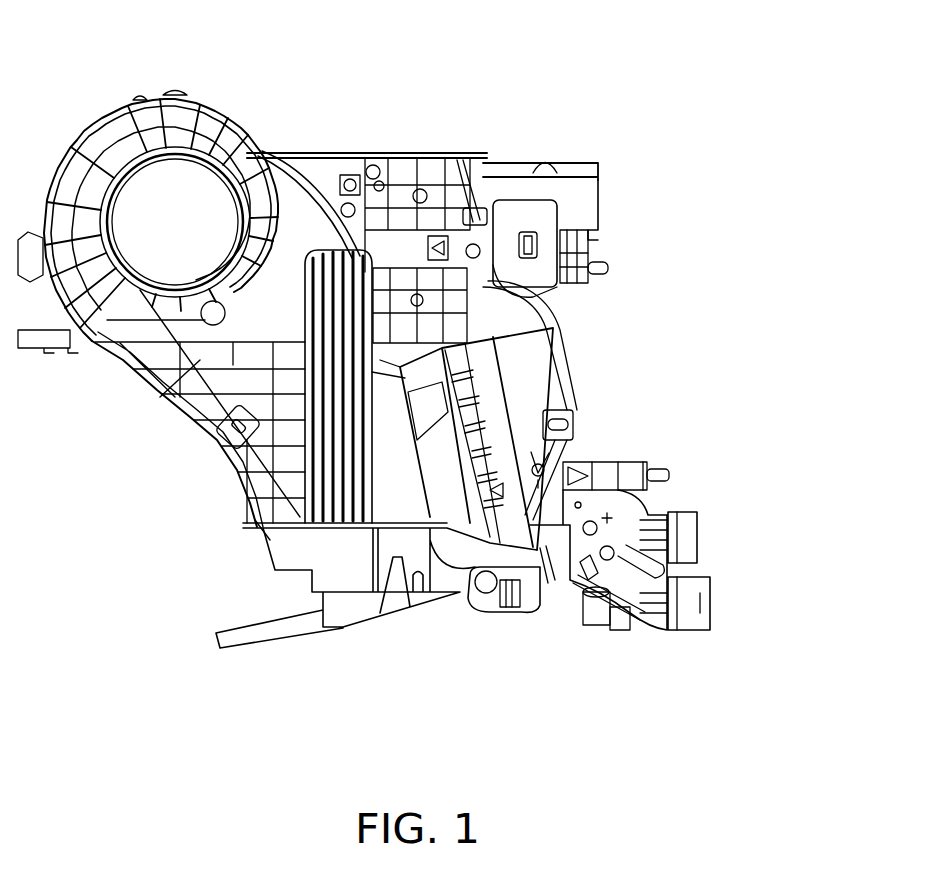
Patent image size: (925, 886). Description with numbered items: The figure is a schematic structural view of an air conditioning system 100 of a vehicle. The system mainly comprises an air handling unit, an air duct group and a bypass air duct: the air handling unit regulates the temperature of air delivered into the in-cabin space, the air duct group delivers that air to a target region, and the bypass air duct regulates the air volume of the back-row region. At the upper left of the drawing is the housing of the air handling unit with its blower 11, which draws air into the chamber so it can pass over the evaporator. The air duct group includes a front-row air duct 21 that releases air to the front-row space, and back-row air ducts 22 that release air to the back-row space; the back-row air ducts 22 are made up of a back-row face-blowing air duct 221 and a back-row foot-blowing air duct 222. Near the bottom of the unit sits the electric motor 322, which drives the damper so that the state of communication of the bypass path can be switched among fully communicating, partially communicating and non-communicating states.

The air conditioning system 100 is at (66, 28).
The blower 11 is at (200, 378).
The front-row air duct 21 is at (587, 208).
The back-row air duct 22 is at (795, 472).
The back-row face-blowing air duct 221 is at (698, 517).
The back-row foot-blowing air duct 222 is at (694, 600).
The electric motor 322 is at (468, 600).